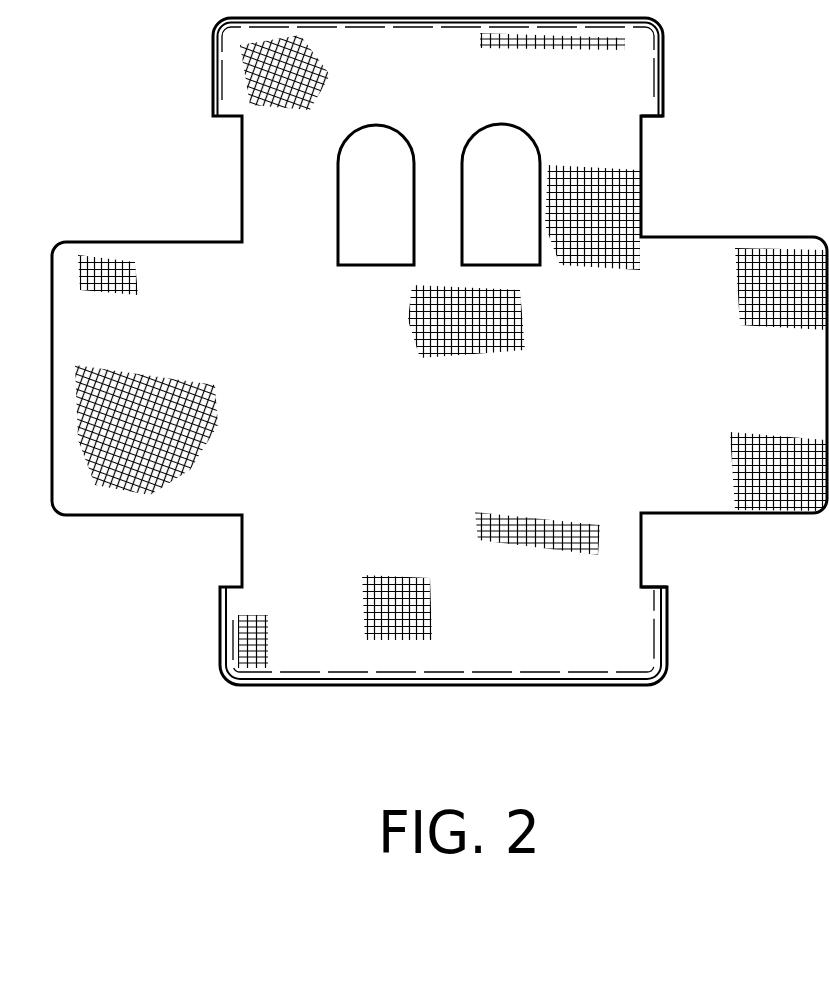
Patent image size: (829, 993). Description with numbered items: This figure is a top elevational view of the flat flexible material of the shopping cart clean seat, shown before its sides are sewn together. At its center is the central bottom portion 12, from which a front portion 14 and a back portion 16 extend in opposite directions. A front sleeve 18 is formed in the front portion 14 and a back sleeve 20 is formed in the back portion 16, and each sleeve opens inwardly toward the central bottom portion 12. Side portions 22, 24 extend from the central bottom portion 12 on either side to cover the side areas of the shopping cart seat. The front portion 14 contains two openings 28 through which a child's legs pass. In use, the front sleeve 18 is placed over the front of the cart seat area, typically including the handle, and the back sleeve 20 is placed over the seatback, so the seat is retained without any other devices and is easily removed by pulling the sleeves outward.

The central bottom portion 12 is at (485, 437).
The front portion 14 is at (452, 91).
The back portion 16 is at (502, 649).
The front sleeve 18 is at (649, 122).
The back sleeve 20 is at (657, 583).
The side portion 22 is at (735, 349).
The side portion 24 is at (247, 353).
The leg openings 28 is at (398, 222).